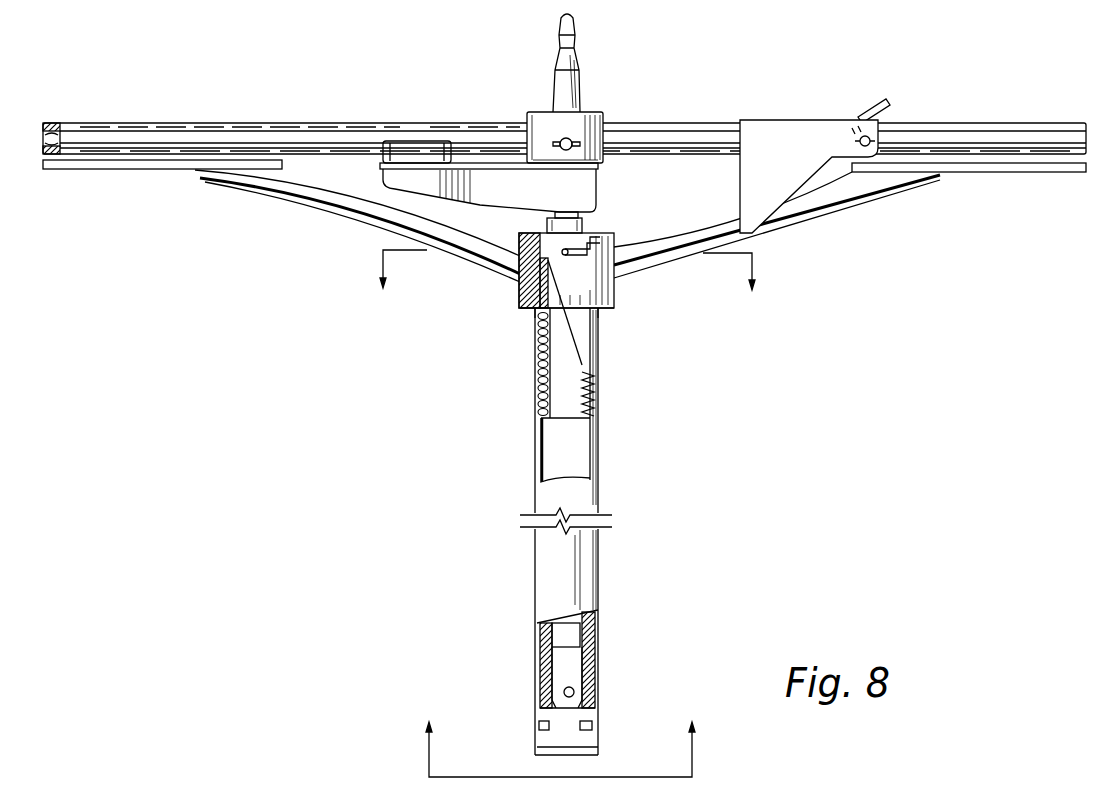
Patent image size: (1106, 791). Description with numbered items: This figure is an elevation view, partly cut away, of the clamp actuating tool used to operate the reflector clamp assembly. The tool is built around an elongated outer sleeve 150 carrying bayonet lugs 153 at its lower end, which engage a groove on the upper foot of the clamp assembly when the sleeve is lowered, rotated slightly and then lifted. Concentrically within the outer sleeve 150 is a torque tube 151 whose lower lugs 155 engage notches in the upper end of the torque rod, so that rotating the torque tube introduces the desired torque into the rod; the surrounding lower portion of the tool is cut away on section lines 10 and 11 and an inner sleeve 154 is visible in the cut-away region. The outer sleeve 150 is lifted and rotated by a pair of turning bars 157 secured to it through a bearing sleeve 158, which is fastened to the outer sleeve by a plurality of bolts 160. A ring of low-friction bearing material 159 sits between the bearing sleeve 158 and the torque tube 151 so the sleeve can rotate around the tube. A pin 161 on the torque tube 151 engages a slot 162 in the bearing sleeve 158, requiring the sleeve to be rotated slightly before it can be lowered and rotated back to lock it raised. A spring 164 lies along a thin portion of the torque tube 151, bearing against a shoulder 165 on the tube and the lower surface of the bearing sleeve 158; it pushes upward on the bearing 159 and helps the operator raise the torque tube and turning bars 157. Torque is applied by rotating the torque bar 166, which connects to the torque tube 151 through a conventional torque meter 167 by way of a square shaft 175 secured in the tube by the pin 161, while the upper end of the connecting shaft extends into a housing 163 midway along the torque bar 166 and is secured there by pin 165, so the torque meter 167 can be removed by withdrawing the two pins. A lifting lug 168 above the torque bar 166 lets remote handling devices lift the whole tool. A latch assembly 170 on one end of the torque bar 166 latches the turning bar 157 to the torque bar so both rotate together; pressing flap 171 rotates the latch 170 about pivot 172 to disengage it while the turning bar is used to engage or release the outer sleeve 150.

The section line 10- 10 is at (566, 282).
The section line 11- 11 is at (560, 734).
The outer sleeve 150 is at (534, 556).
The torque tube 151 is at (596, 633).
The bayonet lugs 153 is at (592, 733).
The inner sleeve 154 is at (592, 432).
The lugs 155 is at (564, 692).
The turning bars 157 is at (785, 218).
The bearing sleeve 158 is at (614, 290).
The ring of low-friction bearing material 159 is at (518, 300).
The bolts 160 is at (603, 310).
The pin 161 is at (517, 272).
The slot 162 is at (600, 240).
The housing 163 is at (600, 114).
The spring 164 is at (593, 405).
The shoulder / pin 165 is at (560, 139).
The torque bar 166 is at (700, 126).
The torque meter 167 is at (527, 208).
The lifting lug 168 is at (582, 60).
The latch assembly 170 is at (741, 182).
The flap 171 is at (890, 106).
The pivot 172 is at (862, 138).
The square shaft 175 is at (582, 226).